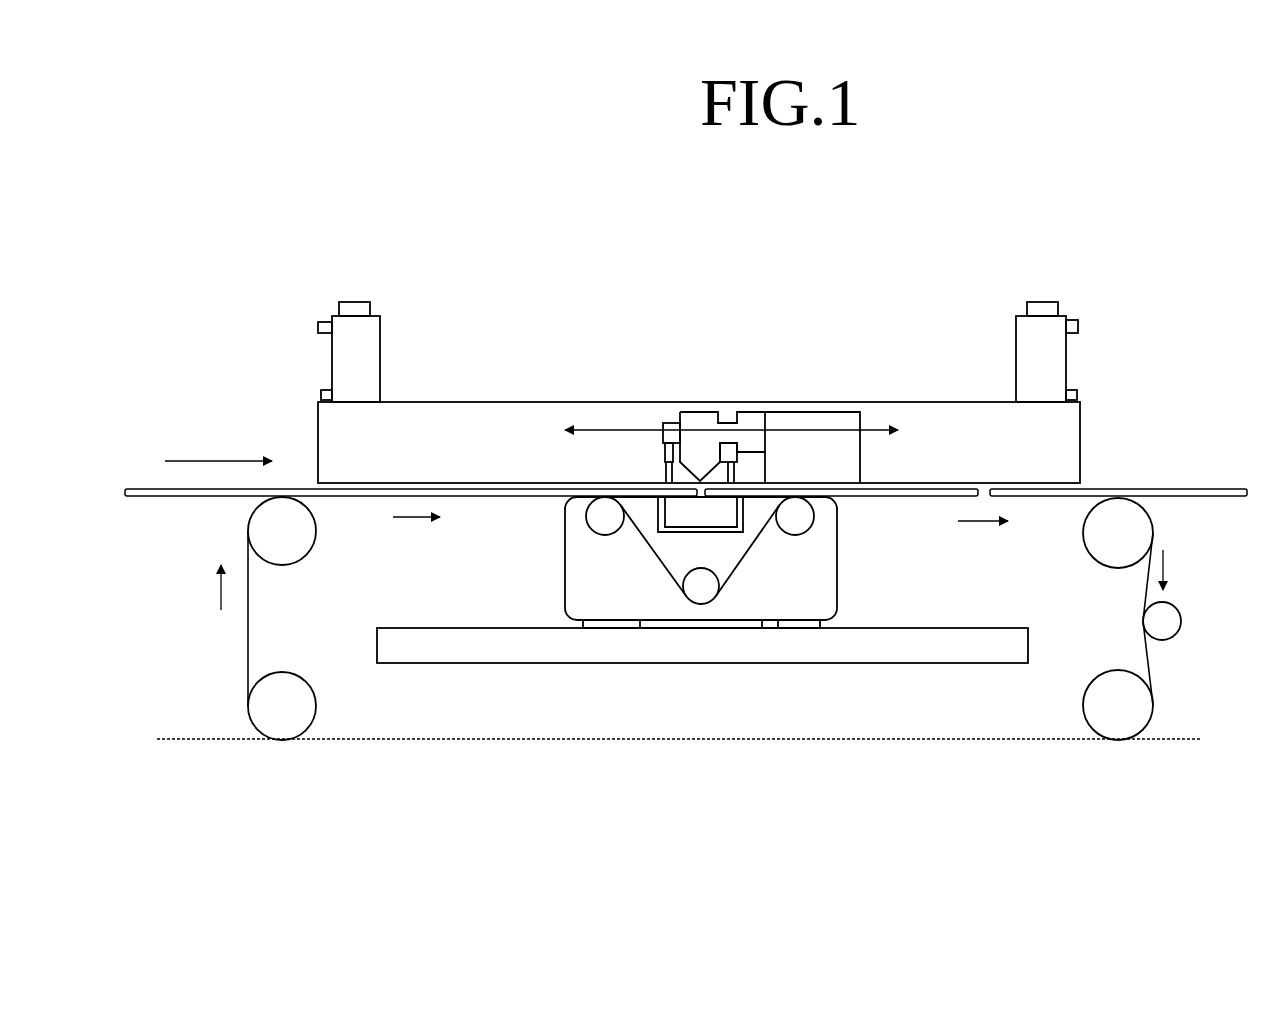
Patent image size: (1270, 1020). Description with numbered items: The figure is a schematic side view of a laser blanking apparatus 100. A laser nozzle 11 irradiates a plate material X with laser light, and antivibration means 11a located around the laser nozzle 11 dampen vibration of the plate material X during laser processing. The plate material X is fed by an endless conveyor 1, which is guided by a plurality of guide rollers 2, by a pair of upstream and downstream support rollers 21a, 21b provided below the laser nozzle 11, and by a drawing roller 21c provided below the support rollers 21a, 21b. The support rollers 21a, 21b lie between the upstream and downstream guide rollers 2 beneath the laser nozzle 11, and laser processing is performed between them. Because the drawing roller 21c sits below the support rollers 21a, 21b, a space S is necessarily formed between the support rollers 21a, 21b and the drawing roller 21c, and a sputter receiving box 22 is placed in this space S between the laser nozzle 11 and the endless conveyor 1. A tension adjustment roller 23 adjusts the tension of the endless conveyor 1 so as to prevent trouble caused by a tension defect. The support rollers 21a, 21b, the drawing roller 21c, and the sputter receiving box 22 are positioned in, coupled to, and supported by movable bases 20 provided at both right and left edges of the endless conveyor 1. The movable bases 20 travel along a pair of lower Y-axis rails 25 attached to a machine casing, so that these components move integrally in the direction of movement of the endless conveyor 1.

The laser blanking apparatus 100 is at (1097, 236).
The laser nozzle 11 is at (705, 418).
The antivibration means 11a is at (665, 453).
The plate material X is at (138, 492).
The endless conveyor 1 is at (247, 637).
The guide rollers 2 is at (252, 533).
The tension adjustment roller 23 is at (1172, 622).
The movable bases 20 is at (578, 580).
The upstream support roller 21a is at (592, 518).
The downstream support roller 21b is at (800, 512).
The drawing roller 21c is at (695, 600).
The sputter receiving box 22 is at (733, 521).
The space S is at (711, 564).
The lower Y-axis rails 25 is at (930, 647).